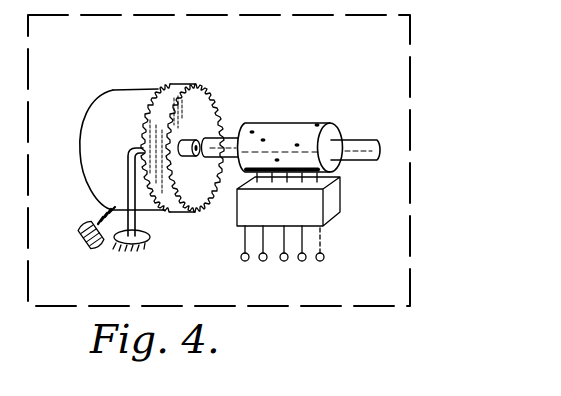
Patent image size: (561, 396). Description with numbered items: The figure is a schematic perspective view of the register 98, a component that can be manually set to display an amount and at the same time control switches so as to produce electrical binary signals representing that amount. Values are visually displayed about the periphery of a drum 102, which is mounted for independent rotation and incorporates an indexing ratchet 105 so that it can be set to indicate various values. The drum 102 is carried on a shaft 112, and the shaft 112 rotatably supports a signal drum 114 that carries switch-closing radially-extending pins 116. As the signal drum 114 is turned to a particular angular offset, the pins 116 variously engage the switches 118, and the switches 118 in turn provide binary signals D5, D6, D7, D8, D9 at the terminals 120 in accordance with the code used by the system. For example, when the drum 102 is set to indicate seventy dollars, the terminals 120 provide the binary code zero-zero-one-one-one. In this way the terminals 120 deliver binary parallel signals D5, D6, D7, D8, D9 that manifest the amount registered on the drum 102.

The register 98 is at (270, 316).
The drum 102 is at (154, 60).
The indexing ratchet 105 is at (197, 102).
The shaft 112 is at (223, 140).
The signal drum 114 is at (330, 124).
The switch-closing radially-extending pins 116 is at (297, 146).
The switches 118 is at (334, 197).
The terminals 120 is at (204, 250).
The binary signal D5 is at (324, 256).
The binary signal D6 is at (306, 260).
The binary signal D7 is at (283, 261).
The binary signal D8 is at (262, 261).
The binary signal D9 is at (241, 259).